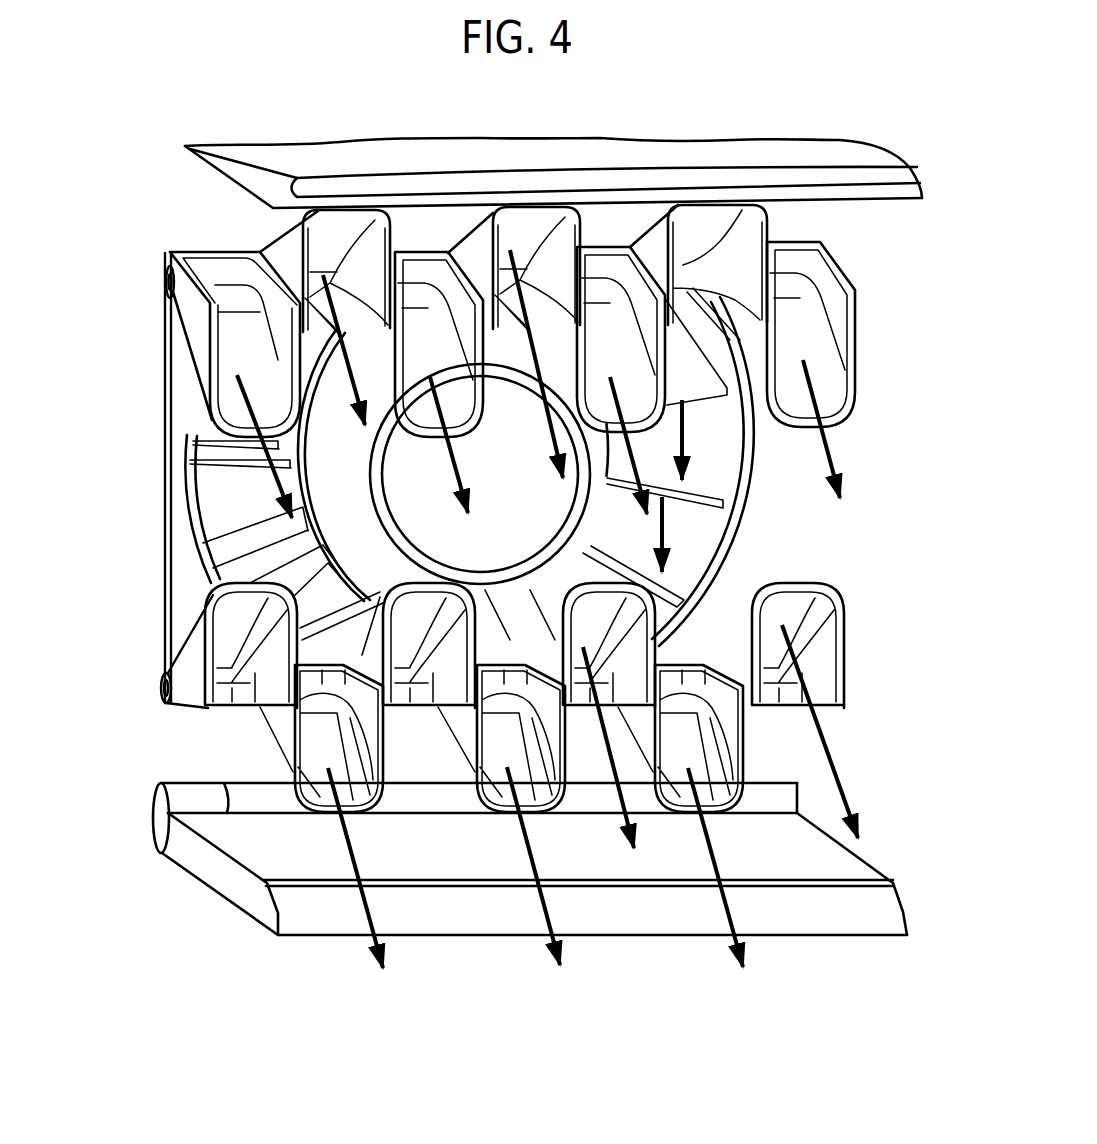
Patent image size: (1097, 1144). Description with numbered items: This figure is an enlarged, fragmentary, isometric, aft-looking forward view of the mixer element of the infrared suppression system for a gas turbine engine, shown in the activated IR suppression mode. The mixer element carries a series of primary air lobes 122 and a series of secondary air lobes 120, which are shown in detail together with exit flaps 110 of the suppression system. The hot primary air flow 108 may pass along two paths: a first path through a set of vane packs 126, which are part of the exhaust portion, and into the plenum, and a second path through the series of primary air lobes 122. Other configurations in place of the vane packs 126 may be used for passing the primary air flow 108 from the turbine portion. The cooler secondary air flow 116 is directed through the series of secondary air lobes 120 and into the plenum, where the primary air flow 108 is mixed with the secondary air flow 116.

The primary air flow 108 is at (343, 268).
The exit flap 110 is at (310, 163).
The secondary air flow 116 is at (445, 345).
The secondary air lobe 120 is at (203, 302).
The primary air lobe 122 is at (592, 222).
The vane pack 126 is at (213, 492).